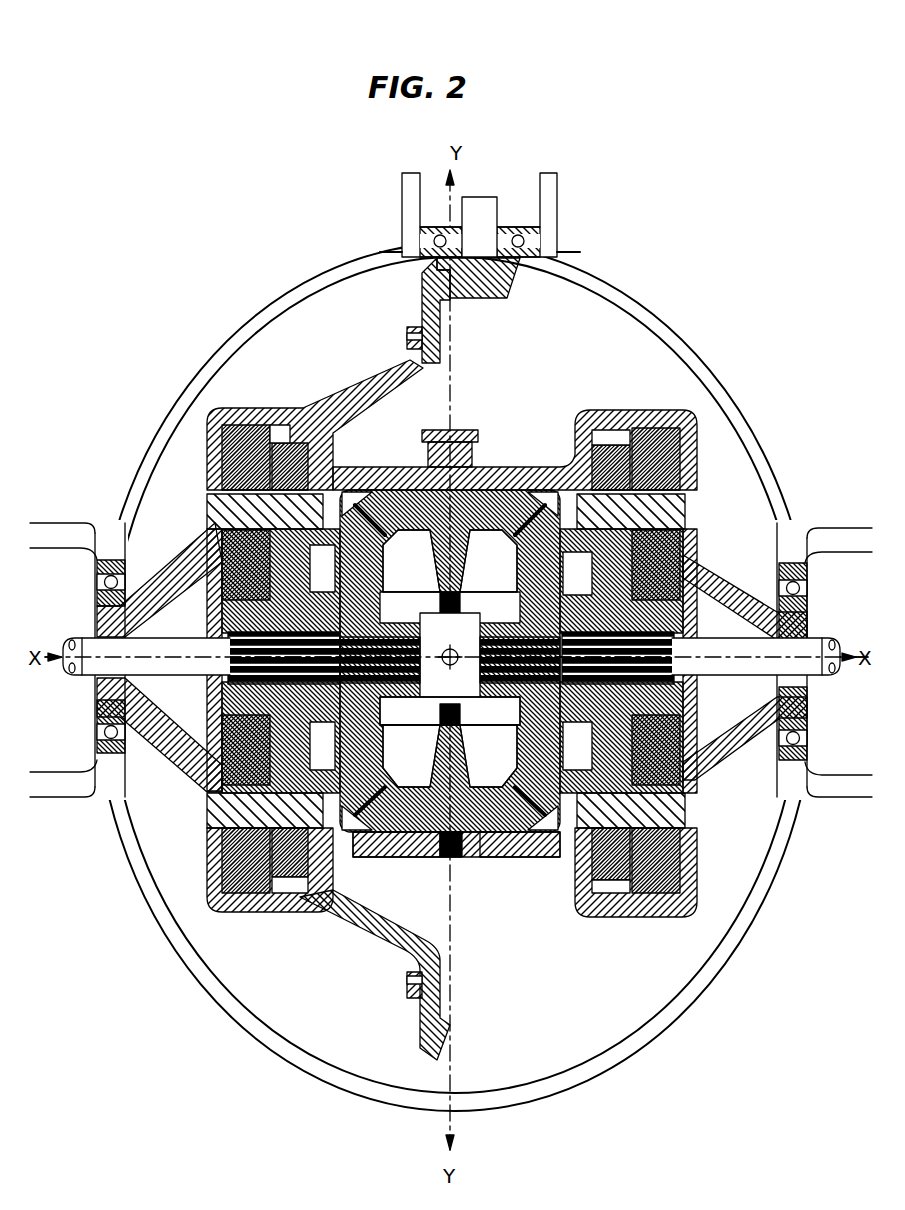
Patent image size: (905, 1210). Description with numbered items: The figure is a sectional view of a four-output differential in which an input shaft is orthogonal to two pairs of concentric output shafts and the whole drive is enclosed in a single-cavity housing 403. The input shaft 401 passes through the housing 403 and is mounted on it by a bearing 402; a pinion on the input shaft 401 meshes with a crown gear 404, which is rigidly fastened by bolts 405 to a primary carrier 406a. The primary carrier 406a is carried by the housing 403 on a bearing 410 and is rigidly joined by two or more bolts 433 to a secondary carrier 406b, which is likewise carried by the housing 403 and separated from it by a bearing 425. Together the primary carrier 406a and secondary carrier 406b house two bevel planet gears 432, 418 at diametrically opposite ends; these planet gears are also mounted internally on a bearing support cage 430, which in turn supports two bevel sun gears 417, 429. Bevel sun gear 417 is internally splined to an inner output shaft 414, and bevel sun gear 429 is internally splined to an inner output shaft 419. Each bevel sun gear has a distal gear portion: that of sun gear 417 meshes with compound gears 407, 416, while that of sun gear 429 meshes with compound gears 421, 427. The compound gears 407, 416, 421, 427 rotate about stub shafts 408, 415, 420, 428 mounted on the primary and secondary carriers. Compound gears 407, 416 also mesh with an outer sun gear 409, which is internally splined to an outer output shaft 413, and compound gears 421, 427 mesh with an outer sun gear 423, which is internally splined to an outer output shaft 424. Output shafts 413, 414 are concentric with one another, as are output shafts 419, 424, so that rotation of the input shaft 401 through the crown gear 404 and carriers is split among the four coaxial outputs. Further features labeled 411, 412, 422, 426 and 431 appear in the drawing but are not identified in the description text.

The input shaft 401 is at (518, 286).
The bearing 402 is at (425, 222).
The housing 403 is at (385, 250).
The crown gear 404 is at (450, 340).
The bolts 405 is at (407, 343).
The primary carrier 406a is at (388, 400).
The secondary carrier 406b is at (545, 467).
The compound gear 407 is at (285, 430).
The stub shaft 408 is at (215, 512).
The outer sun gear 409 is at (222, 622).
The bearing 410 is at (95, 585).
The left lower housing 411 is at (210, 805).
The left lower shaft bearing 412 is at (95, 735).
The outer output shaft 413 is at (178, 690).
The inner output shaft 414 is at (385, 735).
The stub shaft 415 is at (215, 860).
The compound gear 416 is at (262, 893).
The bevel sun gear 417 is at (380, 857).
The bevel planet gear 418 is at (412, 857).
The inner output shaft 419 is at (510, 700).
The stub shaft 420 is at (575, 855).
The compound gear 421 is at (640, 880).
The lower end plate right 422 is at (520, 860).
The outer sun gear 423 is at (700, 790).
The outer output shaft 424 is at (676, 688).
The bearing 425 is at (775, 735).
The right shaft bearing 426 is at (810, 690).
The compound gear 427 is at (680, 580).
The stub shaft 428 is at (688, 510).
The bevel sun gear 429 is at (525, 612).
The bearing support cage 430 is at (450, 711).
The upper left hub cavity 431 is at (440, 572).
The bevel planet gear 432 is at (484, 538).
The bolts 433 is at (478, 436).